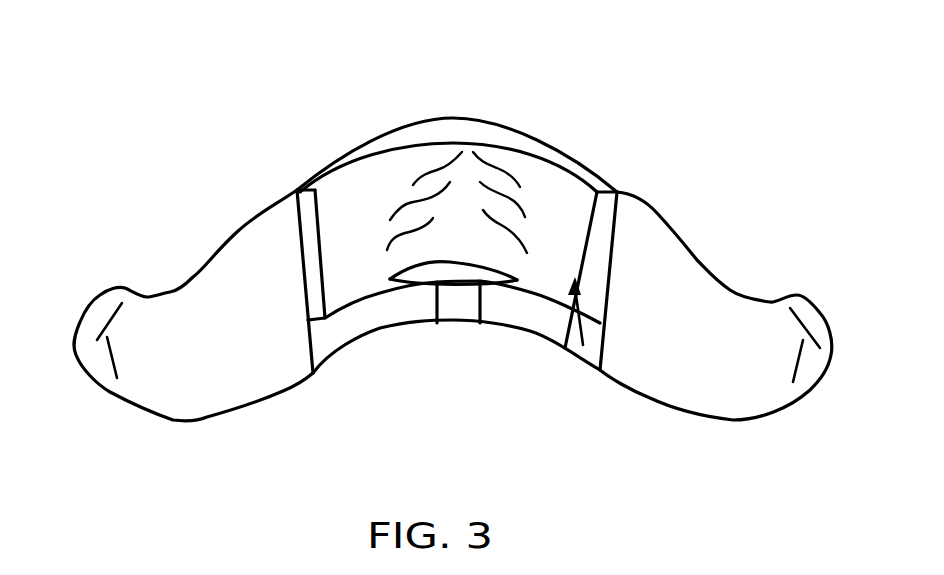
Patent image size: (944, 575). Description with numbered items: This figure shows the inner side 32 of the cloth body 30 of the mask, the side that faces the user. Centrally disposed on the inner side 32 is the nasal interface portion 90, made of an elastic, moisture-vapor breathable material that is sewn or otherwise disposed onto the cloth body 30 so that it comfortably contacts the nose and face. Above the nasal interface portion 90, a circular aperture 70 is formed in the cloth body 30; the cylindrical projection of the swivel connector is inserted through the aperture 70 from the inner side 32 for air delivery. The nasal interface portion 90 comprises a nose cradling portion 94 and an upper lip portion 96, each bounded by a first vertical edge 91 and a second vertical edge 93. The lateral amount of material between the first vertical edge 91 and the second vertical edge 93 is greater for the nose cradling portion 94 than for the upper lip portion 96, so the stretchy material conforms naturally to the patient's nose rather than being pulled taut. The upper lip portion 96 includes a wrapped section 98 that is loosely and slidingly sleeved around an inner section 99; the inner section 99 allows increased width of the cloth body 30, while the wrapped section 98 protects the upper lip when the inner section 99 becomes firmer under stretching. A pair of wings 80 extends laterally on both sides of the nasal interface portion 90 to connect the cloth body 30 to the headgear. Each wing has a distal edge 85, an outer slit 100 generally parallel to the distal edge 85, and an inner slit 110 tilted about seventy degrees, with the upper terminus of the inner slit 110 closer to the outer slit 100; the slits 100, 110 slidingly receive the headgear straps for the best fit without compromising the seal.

The cloth body 30 is at (657, 213).
The inner side 32 is at (219, 214).
The circular aperture 70 is at (445, 272).
The wings 80 is at (208, 377).
The distal edge 85 is at (87, 303).
The nasal interface portion 90 is at (610, 112).
The first vertical edge 91 is at (297, 240).
The second vertical edge 93 is at (610, 247).
The nose cradling portion 94 is at (583, 345).
The upper lip portion 96 is at (461, 308).
The wrapped section 98 is at (372, 323).
The inner section 99 is at (468, 325).
The outer slit 100 is at (795, 316).
The inner slit 110 is at (810, 377).